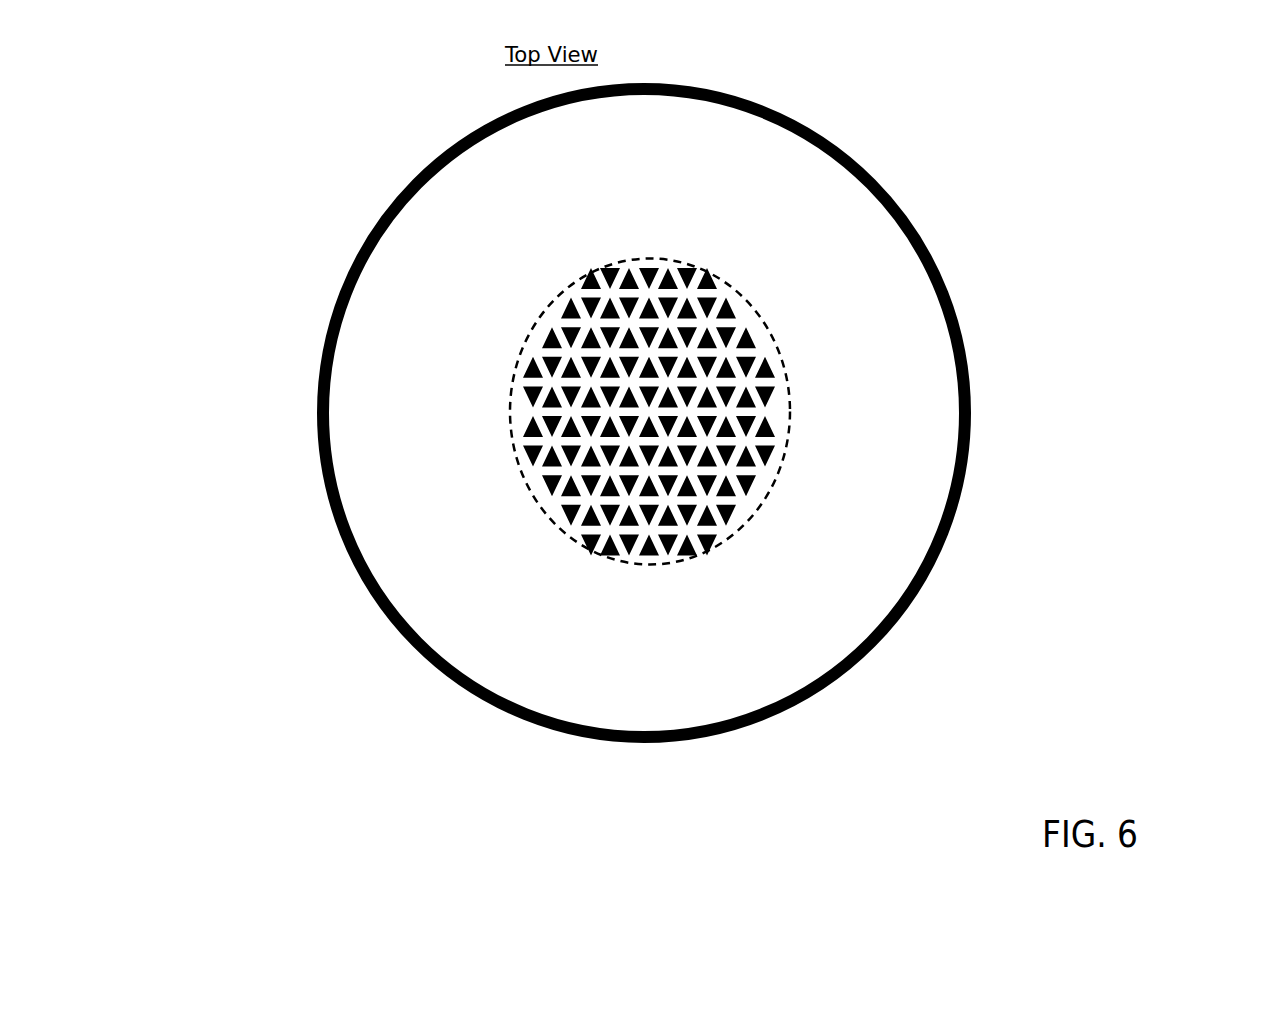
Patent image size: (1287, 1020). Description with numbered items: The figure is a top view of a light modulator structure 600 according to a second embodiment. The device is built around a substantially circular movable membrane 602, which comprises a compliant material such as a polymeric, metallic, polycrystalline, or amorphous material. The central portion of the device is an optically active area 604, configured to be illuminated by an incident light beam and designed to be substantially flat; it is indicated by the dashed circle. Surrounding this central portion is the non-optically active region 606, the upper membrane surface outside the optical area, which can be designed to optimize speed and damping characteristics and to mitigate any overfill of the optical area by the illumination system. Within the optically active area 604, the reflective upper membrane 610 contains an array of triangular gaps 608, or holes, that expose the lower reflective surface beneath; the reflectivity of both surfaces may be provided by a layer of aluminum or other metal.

The light modulator structure 600 is at (1286, 846).
The movable membrane 602 is at (678, 742).
The optically active area 604 is at (768, 488).
The non-optically active region 606 is at (737, 210).
The gaps 608 is at (571, 484).
The upper membrane 610 is at (572, 410).